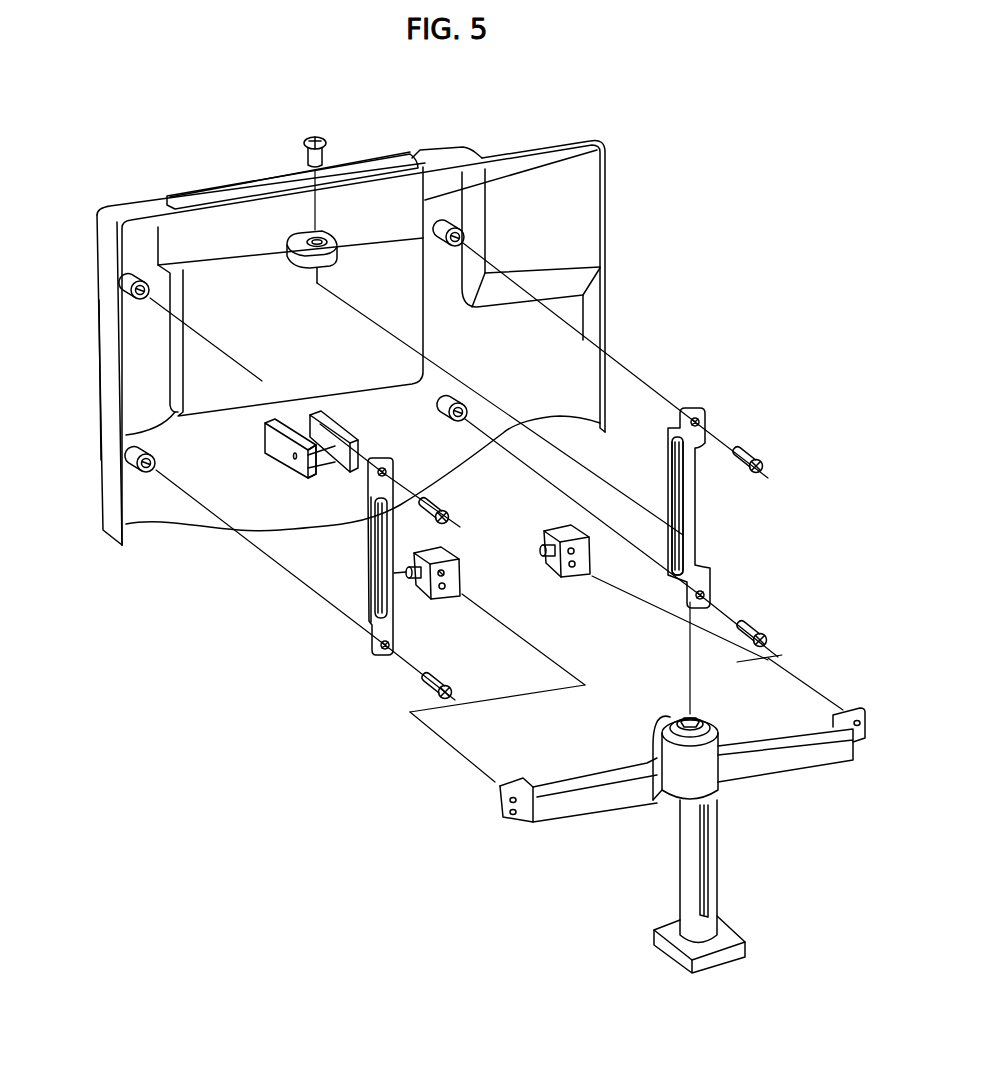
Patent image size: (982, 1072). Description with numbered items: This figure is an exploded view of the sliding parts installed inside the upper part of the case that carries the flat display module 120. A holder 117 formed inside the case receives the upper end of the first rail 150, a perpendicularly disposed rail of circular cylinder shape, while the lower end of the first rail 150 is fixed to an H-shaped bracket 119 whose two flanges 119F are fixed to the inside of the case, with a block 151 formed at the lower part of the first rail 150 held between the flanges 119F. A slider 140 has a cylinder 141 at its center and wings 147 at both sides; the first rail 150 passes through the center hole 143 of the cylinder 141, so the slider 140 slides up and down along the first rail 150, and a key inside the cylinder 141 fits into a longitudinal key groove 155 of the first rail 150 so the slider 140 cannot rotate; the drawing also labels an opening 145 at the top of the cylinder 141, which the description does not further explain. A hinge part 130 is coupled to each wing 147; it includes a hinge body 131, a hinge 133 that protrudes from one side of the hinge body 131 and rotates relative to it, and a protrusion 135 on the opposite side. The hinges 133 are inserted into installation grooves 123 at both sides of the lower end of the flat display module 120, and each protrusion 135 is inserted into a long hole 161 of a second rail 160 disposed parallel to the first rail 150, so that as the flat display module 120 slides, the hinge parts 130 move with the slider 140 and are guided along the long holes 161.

The flat display module 120 is at (274, 174).
The holder 117 is at (334, 234).
The installation groove 123 is at (130, 437).
The bracket 119 is at (272, 442).
The flange 119F is at (301, 476).
The second rail 160 is at (380, 486).
The long hole 161 is at (674, 440).
The hinge part 130 is at (492, 571).
The hinge body 131 is at (460, 596).
The hinge 133 is at (540, 549).
The protrusion 135 is at (410, 578).
The slider 140 is at (682, 843).
The cylinder 141 is at (703, 788).
The center hole 143 is at (662, 808).
The hole 145 is at (695, 712).
The wing 147 is at (572, 812).
The first rail 150 is at (686, 871).
The block 151 is at (713, 960).
The key groove 155 is at (712, 920).